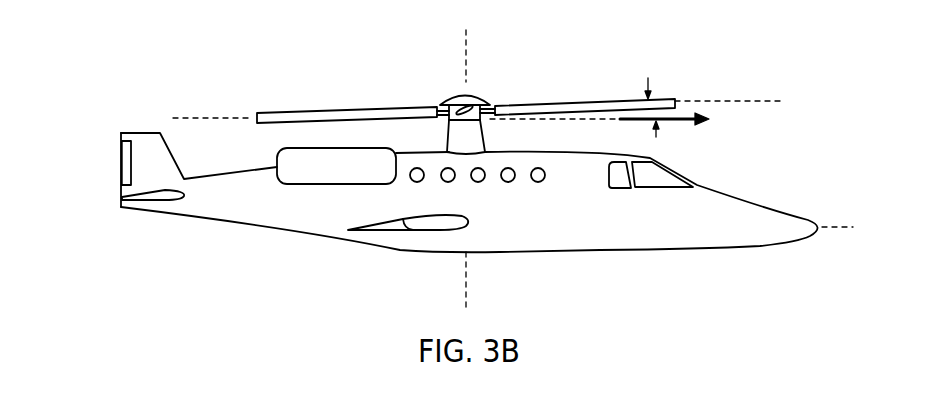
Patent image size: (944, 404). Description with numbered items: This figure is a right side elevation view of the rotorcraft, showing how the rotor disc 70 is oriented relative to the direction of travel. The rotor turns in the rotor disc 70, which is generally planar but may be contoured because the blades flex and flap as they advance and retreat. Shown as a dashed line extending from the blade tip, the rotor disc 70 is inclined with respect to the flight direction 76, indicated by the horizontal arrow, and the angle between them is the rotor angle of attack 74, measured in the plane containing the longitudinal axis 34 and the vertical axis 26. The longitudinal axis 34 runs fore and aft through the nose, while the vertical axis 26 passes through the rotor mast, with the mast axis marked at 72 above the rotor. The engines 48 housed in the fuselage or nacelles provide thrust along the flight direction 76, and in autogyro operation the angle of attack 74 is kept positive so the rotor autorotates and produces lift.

The engine 48 is at (320, 113).
The rotor axis of rotation 72 is at (472, 47).
The vertical axis 26 is at (468, 280).
The rotor disc 70 is at (755, 98).
The longitudinal axis 34 is at (833, 223).
The rotor angle of attack 74 is at (650, 78).
The flight direction 76 is at (683, 123).